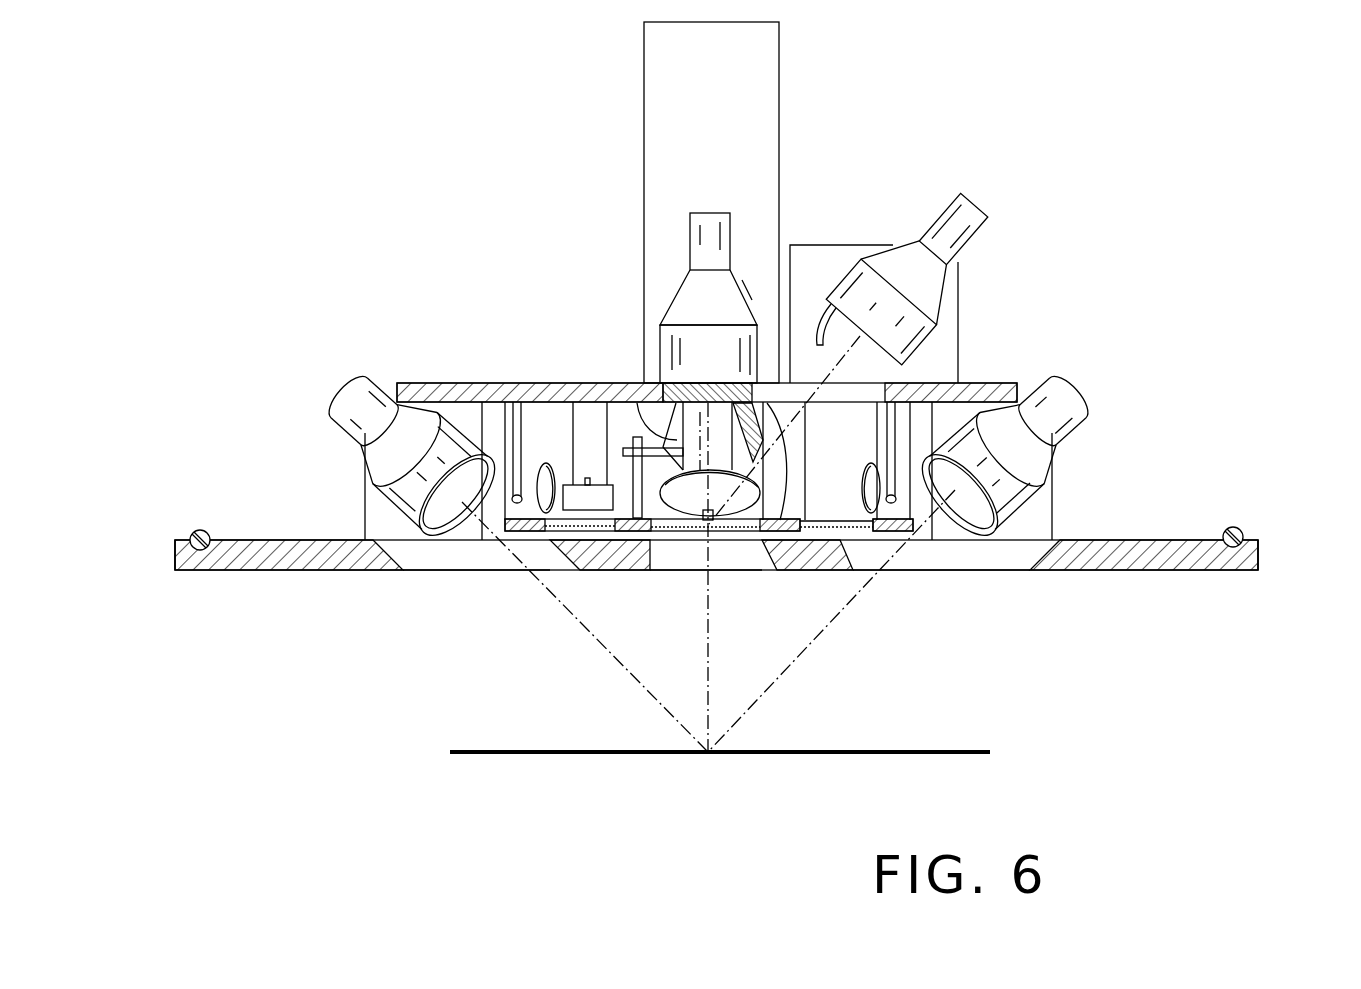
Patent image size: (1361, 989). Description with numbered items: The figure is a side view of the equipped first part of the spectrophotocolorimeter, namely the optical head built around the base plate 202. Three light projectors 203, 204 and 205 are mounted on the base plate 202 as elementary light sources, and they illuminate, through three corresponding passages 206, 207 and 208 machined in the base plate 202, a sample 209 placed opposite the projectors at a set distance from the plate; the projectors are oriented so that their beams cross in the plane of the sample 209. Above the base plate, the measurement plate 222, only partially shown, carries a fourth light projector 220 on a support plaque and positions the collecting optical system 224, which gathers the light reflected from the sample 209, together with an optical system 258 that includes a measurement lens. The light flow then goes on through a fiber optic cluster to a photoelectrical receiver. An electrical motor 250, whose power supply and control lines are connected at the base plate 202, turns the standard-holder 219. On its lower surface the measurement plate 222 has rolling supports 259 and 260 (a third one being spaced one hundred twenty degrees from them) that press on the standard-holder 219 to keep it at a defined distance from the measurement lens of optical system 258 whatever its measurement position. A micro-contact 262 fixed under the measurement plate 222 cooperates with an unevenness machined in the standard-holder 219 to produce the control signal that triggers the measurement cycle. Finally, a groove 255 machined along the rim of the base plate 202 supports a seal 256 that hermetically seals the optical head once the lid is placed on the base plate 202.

The electrical motor 250 is at (644, 82).
The collecting optical system 224 is at (690, 243).
The fourth light projector 220 is at (990, 224).
The measurement plate 222 is at (430, 383).
The micro-contact 262 is at (560, 382).
The rolling support 260 is at (493, 395).
The light projector 204 is at (650, 398).
The rolling support 259 is at (905, 435).
The light projector 203 is at (352, 427).
The light projector 205 is at (1060, 410).
The seal 256 is at (195, 530).
The base plate 202 is at (1138, 540).
The groove 255 is at (182, 552).
The passage 206 is at (440, 560).
The passage 207 is at (672, 555).
The optical system 258 is at (779, 540).
The standard-holder 219 is at (886, 540).
The passage 208 is at (988, 553).
The sample 209 is at (950, 750).